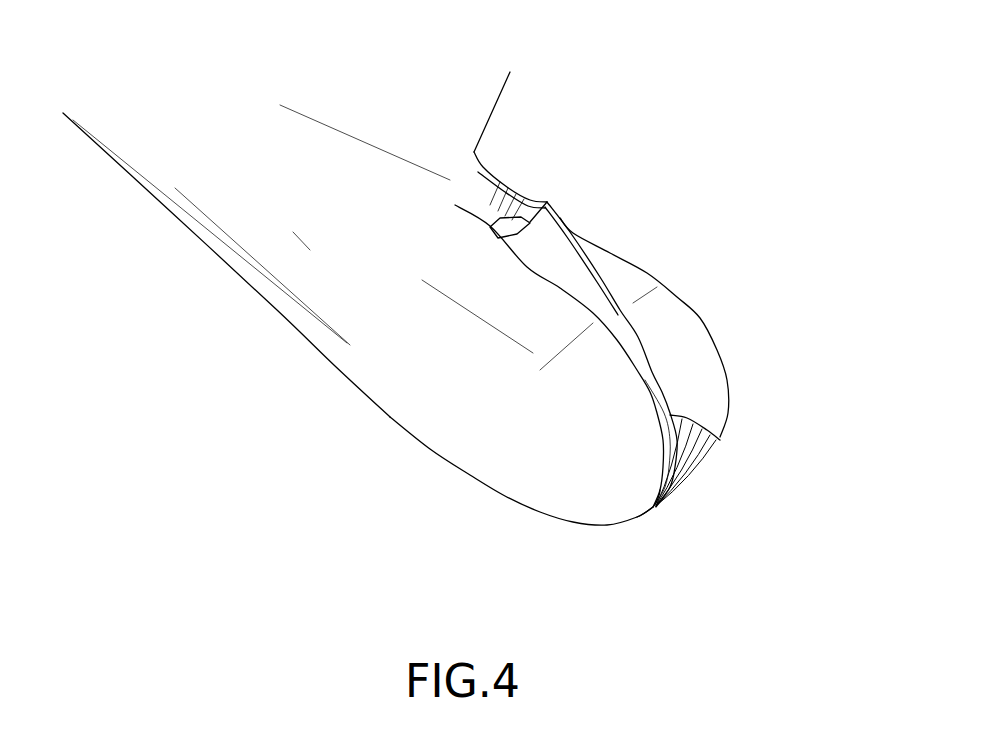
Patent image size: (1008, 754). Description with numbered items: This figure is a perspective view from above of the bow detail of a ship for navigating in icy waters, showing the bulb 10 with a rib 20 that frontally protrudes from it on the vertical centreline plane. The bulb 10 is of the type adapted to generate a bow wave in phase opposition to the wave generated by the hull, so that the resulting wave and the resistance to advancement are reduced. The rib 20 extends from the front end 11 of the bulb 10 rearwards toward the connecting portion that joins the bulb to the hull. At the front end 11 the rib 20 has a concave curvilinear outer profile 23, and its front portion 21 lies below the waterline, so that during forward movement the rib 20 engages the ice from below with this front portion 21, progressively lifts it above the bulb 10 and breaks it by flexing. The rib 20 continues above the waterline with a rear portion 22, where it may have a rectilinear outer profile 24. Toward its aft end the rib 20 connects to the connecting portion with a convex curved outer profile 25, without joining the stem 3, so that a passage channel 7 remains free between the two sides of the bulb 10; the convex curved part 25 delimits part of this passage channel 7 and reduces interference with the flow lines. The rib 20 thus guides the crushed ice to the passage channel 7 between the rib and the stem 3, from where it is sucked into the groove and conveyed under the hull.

The stem 3 is at (494, 97).
The passage channel 7 is at (524, 152).
The bulb 10 is at (293, 433).
The front end of the bulb 11 is at (580, 448).
The rib 20 is at (691, 374).
The front portion of the rib 21 is at (660, 521).
The rear portion of the rib 22 is at (624, 285).
The concave curvilinear outer profile 23 is at (720, 440).
The rectilinear outer profile 24 is at (577, 251).
The convex curved outer profile 25 is at (485, 222).